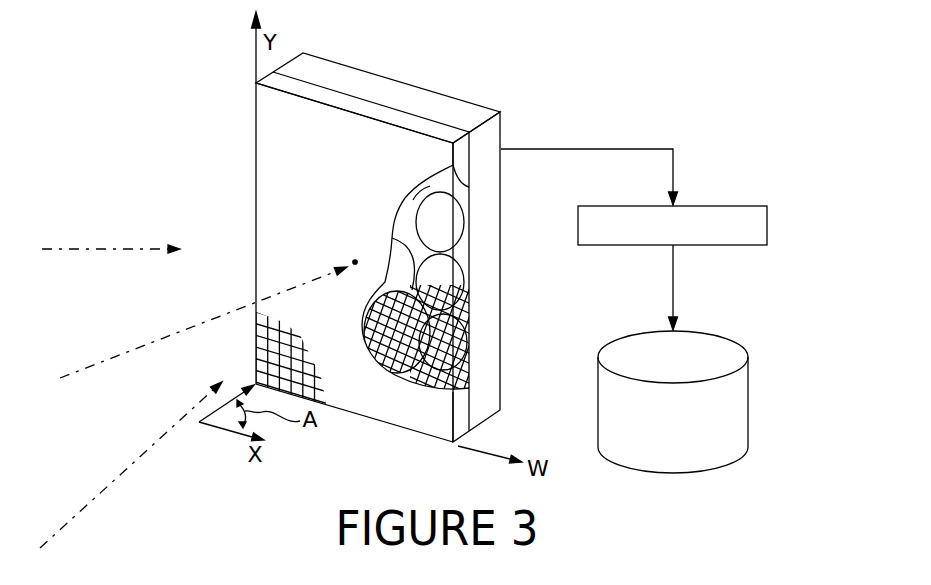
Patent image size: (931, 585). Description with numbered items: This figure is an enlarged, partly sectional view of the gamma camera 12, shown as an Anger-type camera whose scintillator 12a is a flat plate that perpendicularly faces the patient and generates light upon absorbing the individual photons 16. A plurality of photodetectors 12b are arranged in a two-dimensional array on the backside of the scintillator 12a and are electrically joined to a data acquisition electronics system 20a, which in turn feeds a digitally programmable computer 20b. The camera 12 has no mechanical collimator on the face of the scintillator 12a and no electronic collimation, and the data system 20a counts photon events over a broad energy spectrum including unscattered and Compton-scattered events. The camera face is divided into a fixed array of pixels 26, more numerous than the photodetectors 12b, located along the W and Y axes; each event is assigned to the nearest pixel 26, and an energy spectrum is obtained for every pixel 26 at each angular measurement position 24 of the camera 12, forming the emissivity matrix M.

The gamma camera 12 is at (428, 84).
The scintillator 12a is at (317, 192).
The photodetectors 12b is at (454, 228).
The photons 16 is at (210, 318).
The data acquisition electronics system 20a is at (722, 205).
The computer 20b is at (750, 404).
The angular measurement position 24 is at (355, 261).
The picture elements (pixels) 26 is at (466, 360).